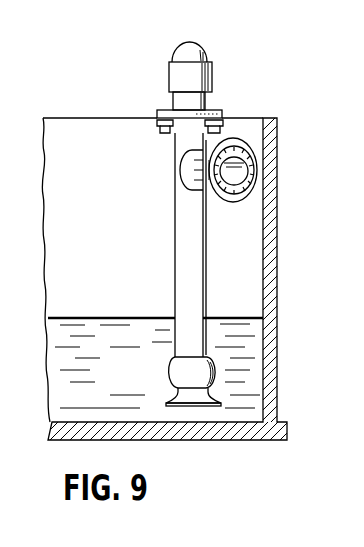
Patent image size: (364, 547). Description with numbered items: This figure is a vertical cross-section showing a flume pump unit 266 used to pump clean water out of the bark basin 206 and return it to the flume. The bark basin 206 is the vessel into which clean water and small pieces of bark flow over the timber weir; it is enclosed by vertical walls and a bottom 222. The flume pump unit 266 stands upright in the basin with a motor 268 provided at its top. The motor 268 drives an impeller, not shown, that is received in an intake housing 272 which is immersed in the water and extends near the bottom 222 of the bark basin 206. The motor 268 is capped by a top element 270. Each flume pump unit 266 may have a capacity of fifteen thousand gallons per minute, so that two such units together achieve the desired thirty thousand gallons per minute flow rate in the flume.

The cap 270 is at (185, 42).
The motor 268 is at (200, 77).
The flume pump unit 266 is at (214, 104).
The intake housing 272 is at (166, 368).
The bark basin 206 is at (238, 350).
The bottom 222 is at (245, 421).